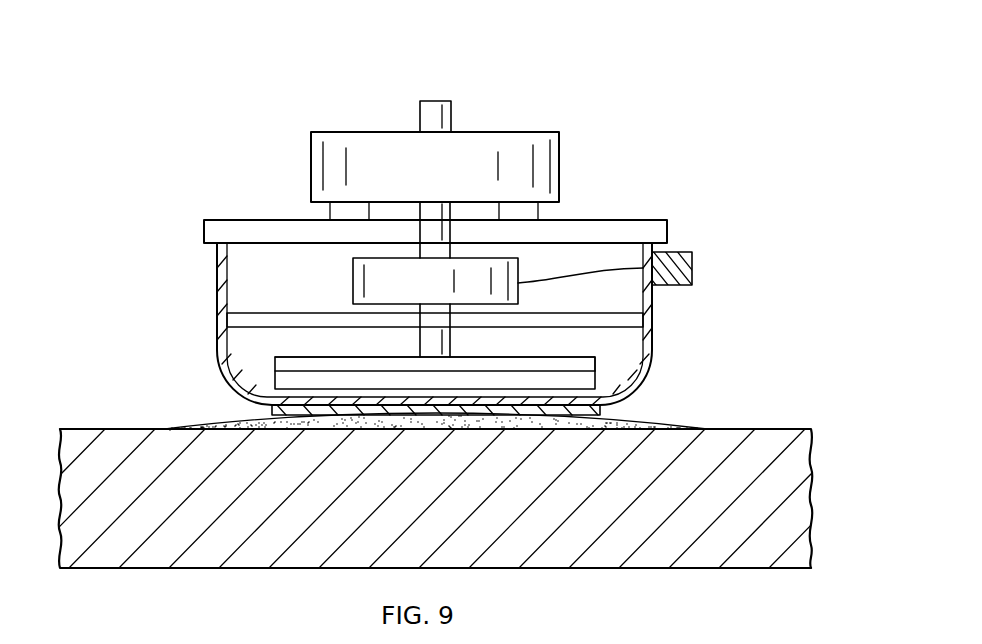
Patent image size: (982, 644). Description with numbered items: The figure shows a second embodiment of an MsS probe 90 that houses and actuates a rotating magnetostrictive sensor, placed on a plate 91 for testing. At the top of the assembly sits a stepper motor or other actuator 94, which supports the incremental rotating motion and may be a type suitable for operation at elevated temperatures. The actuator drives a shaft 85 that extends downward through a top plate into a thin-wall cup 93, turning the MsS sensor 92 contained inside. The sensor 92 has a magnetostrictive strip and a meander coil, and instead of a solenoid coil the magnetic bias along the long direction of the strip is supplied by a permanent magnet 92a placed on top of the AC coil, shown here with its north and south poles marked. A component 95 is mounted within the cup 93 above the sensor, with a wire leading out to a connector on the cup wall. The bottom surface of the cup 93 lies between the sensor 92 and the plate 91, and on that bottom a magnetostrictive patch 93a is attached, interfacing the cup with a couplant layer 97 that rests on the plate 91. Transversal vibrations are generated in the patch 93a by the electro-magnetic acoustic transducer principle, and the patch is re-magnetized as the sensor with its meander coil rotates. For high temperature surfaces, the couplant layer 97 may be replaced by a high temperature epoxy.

The MsS probe 90 is at (612, 116).
The plate 91 is at (196, 569).
The MsS sensor 92 is at (392, 333).
The permanent magnet 92a is at (287, 357).
The thin-wall cup 93 is at (218, 305).
The magnetostrictive patch 93a is at (263, 412).
The actuator 94 is at (523, 132).
The shaft 85 is at (420, 116).
The sensor 95 is at (353, 276).
The couplant layer 97 is at (672, 420).